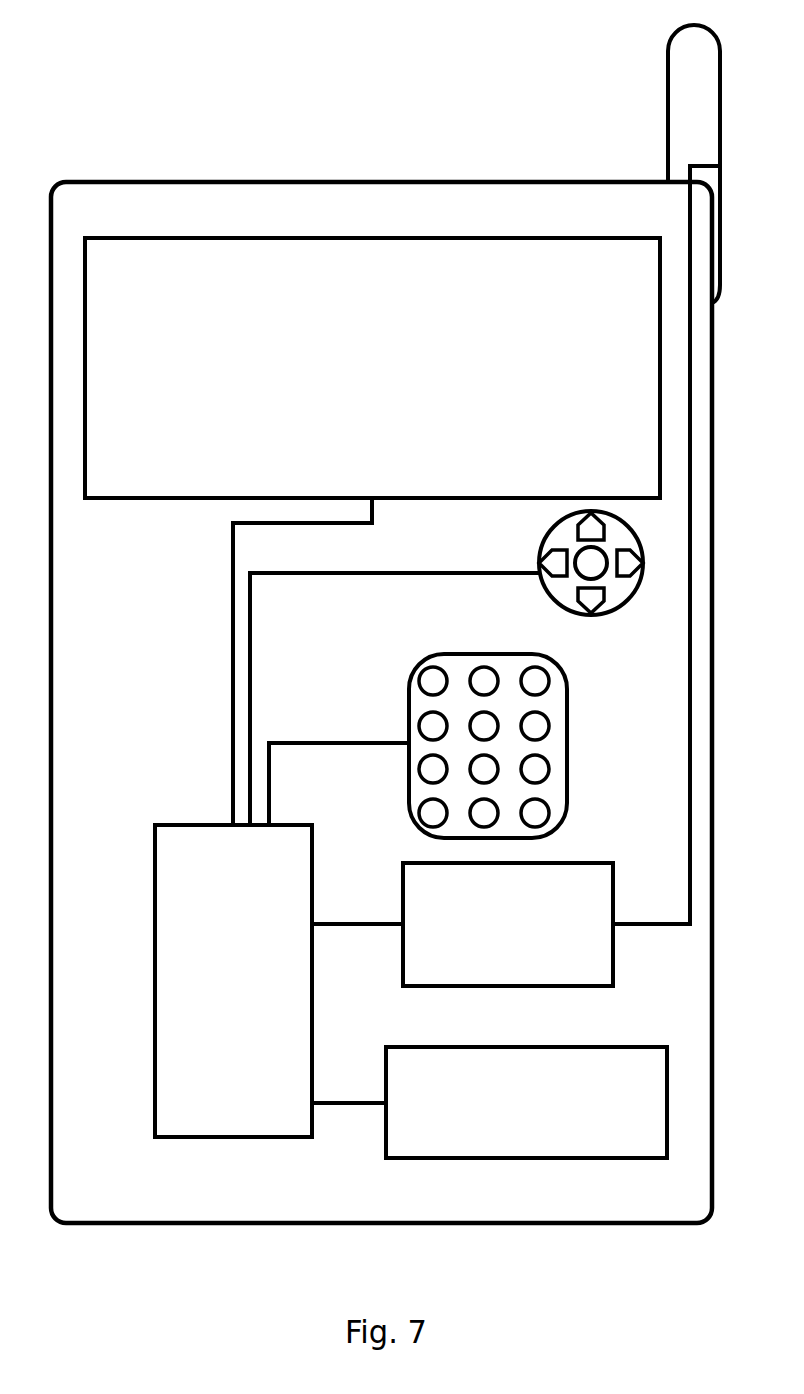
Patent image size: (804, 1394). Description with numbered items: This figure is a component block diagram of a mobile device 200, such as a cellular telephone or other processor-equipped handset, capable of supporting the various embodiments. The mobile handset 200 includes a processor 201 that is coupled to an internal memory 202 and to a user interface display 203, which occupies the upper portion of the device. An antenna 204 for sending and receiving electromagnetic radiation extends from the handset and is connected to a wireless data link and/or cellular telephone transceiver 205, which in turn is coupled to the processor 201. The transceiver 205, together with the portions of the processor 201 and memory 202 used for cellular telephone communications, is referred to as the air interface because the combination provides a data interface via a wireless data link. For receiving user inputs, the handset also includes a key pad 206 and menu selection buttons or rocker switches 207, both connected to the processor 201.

The mobile device 200 is at (330, 183).
The processor 201 is at (218, 990).
The internal memory 202 is at (506, 1114).
The user interface display 203 is at (335, 371).
The antenna 204 is at (668, 60).
The cellular telephone transceiver 205 is at (488, 937).
The key pad 206 is at (567, 743).
The rocker switches 207 is at (590, 613).